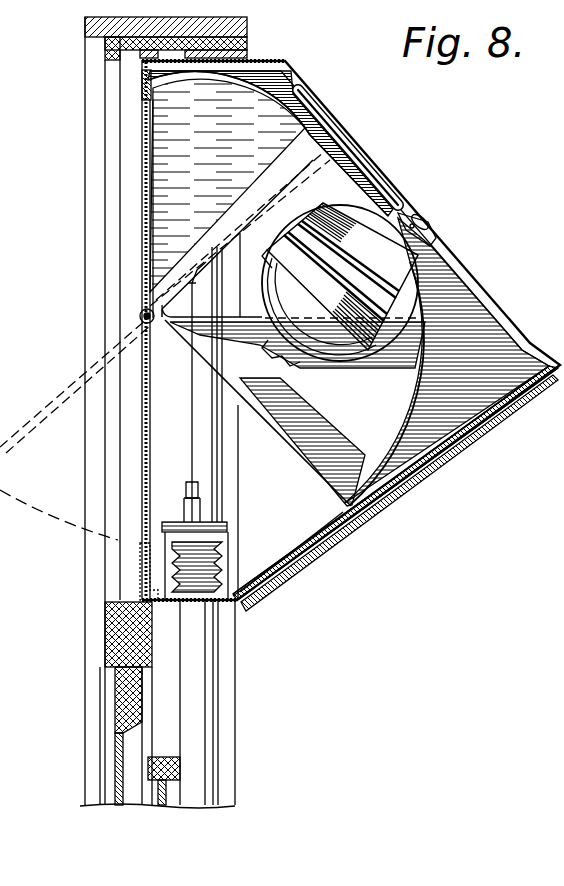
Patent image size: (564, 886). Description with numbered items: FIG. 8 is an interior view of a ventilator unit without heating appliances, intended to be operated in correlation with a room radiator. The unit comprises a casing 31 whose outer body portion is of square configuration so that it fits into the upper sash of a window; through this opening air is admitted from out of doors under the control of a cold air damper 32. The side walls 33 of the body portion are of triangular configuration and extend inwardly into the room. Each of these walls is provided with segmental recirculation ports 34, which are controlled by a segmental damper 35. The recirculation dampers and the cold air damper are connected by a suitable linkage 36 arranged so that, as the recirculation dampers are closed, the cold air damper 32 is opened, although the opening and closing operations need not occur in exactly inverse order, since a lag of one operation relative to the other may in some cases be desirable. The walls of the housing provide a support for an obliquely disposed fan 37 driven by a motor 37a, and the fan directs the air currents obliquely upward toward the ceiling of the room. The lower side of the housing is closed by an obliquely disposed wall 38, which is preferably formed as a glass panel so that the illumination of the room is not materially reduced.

The casing 31 is at (519, 383).
The cold air damper 32 is at (140, 166).
The side walls 33 is at (447, 398).
The segmental recirculation ports 34 is at (349, 194).
The segmental damper 35 is at (178, 207).
The linkage 36 is at (196, 486).
The fan 37 is at (393, 198).
The motor 37a is at (427, 265).
The obliquely disposed wall 38 is at (372, 500).